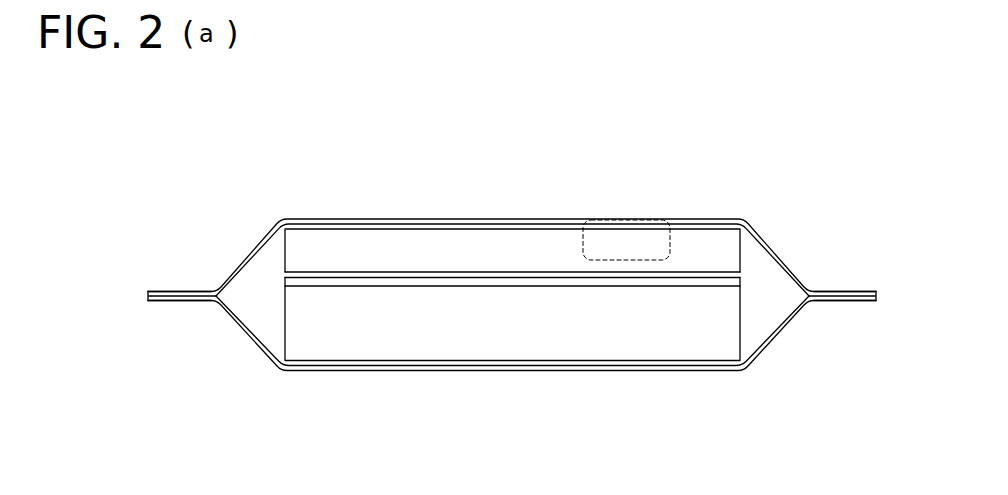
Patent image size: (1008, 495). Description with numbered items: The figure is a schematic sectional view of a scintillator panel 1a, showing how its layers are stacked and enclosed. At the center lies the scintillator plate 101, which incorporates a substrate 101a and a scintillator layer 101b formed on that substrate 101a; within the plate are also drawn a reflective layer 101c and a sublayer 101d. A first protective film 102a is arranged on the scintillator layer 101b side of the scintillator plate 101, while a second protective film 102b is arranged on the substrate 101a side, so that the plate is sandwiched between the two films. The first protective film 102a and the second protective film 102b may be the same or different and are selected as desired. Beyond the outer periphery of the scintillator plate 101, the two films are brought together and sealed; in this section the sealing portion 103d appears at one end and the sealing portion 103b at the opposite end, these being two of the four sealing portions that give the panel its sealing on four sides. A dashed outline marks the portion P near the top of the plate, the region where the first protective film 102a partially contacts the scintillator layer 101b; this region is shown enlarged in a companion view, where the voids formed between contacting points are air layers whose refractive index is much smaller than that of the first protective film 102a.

The scintillator panel 1a is at (512, 260).
The scintillator plate 101 is at (482, 289).
The substrate 101a is at (338, 347).
The scintillator layer 101b is at (310, 242).
The reflective layer 101c is at (416, 287).
The sublayer 101d is at (415, 272).
The first protective film 102a is at (463, 218).
The second protective film 102b is at (468, 372).
The sealing portion 103b is at (828, 292).
The sealing portion 103d is at (175, 290).
The portion p P is at (613, 218).